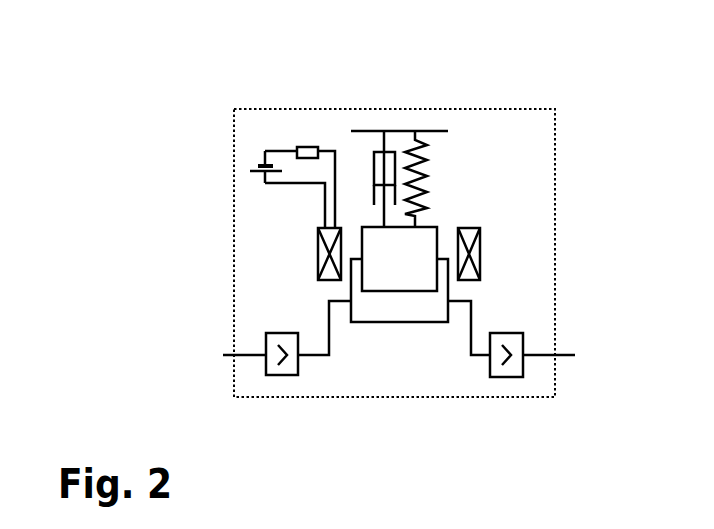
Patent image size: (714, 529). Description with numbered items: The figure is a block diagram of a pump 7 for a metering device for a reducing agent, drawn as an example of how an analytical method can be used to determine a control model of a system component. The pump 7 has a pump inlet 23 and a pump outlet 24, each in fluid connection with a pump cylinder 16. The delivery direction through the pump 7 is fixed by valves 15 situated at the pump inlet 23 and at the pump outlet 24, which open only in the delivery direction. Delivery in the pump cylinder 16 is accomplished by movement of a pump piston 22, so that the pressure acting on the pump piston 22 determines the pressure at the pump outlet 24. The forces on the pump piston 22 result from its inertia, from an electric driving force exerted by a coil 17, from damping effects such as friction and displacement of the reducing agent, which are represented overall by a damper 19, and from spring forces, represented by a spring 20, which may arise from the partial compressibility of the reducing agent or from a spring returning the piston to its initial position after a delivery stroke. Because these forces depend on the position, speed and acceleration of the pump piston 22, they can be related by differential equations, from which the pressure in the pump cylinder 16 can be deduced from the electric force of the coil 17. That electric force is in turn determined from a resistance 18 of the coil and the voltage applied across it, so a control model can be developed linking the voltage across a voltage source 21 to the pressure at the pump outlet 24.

The pump 7 is at (192, 125).
The valves 15 is at (285, 376).
The pump cylinder 16 is at (405, 322).
The coil 17 is at (483, 247).
The resistance 18 is at (306, 146).
The damper 19 is at (372, 172).
The spring 20 is at (426, 170).
The voltage source 21 is at (258, 168).
The pump piston 22 is at (437, 226).
The pump inlet 23 is at (235, 353).
The pump outlet 24 is at (553, 350).